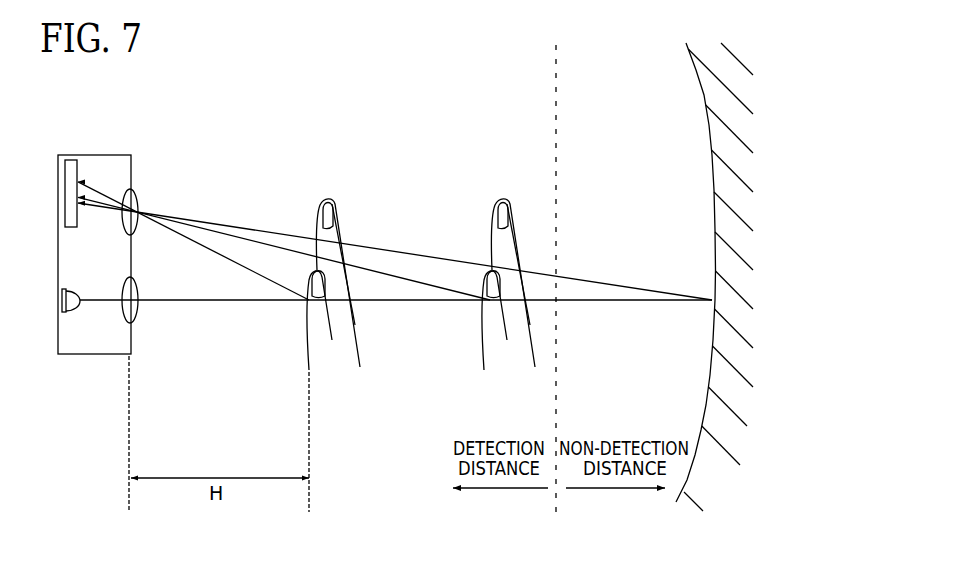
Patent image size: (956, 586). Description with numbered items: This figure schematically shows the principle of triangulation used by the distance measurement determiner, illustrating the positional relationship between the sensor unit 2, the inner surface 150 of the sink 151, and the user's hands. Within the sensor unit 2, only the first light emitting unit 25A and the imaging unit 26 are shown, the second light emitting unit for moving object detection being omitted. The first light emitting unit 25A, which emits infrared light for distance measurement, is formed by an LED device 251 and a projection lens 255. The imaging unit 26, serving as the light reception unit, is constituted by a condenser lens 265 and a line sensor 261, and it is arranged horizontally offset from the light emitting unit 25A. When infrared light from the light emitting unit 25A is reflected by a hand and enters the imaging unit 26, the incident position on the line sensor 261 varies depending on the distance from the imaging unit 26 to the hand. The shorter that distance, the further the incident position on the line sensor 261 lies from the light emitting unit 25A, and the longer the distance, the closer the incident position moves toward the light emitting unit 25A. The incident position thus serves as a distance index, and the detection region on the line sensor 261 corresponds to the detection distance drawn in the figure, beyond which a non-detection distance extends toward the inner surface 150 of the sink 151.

The sensor unit 2 is at (106, 394).
The imaging unit 26 is at (137, 178).
The line sensor 261 is at (72, 159).
The condenser lens 265 is at (132, 199).
The first light emitting unit 25A is at (142, 335).
The LED device 251 is at (70, 316).
The projection lens 255 is at (136, 312).
The inner surface 150 is at (711, 352).
The sink 151 is at (728, 478).